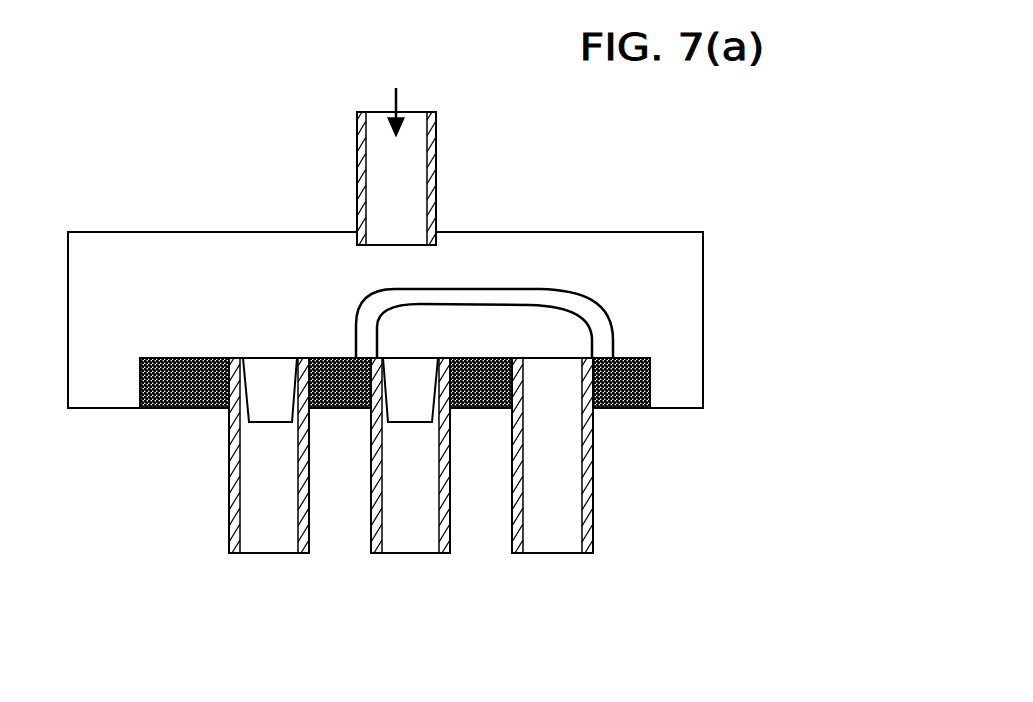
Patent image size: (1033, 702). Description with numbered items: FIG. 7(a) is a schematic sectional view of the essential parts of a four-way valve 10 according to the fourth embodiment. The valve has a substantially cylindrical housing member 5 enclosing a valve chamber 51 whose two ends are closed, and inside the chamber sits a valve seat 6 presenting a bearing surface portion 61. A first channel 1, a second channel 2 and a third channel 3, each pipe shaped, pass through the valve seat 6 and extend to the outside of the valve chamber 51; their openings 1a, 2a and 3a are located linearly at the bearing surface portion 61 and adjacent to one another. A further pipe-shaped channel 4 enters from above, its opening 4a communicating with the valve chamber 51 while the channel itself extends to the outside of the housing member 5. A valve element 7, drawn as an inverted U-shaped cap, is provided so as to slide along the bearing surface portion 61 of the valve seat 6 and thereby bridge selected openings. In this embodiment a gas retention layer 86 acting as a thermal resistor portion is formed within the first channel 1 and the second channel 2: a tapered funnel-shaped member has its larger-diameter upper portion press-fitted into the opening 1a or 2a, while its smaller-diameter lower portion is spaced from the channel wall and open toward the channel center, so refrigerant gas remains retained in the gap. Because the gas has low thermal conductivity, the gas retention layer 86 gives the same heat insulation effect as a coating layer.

The four-way valve 10 is at (28, 147).
The housing member 5 is at (703, 268).
The valve chamber 51 is at (260, 250).
The bearing surface portion 61 is at (157, 357).
The valve seat 6 is at (628, 383).
The valve element 7 is at (607, 343).
The pipe-shaped channel 4 is at (432, 130).
The opening of pipe-shaped channel 4a is at (408, 243).
The first channel 1 is at (263, 533).
The opening of first channel 1a is at (263, 357).
The second channel 2 is at (413, 535).
The opening of second channel 2a is at (403, 357).
The third channel 3 is at (548, 537).
The opening of third channel 3a is at (550, 357).
The gas retention layer 86 is at (227, 408).